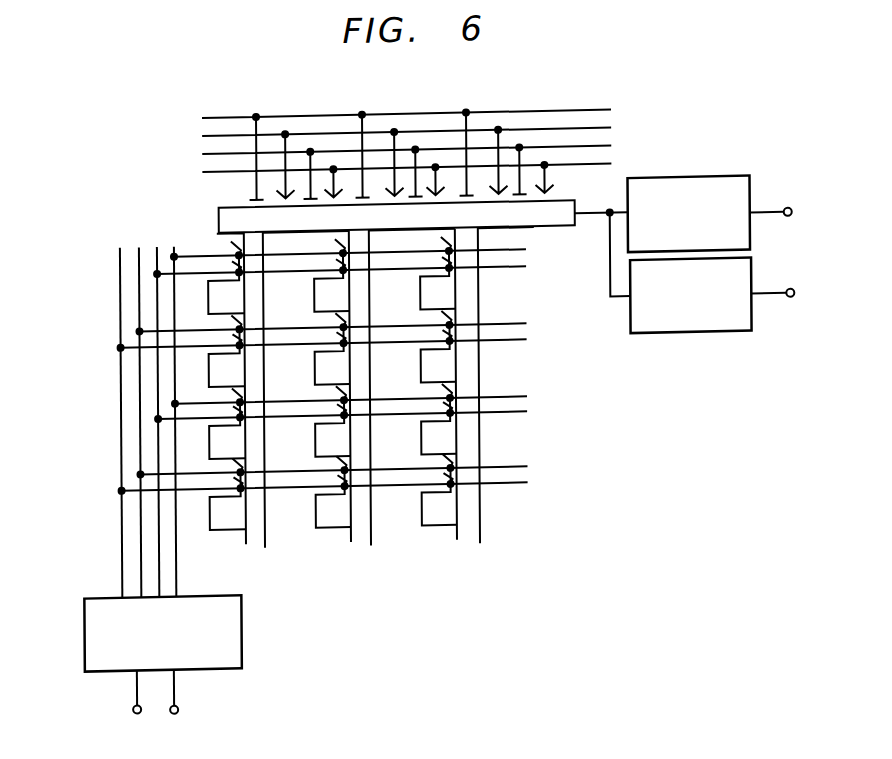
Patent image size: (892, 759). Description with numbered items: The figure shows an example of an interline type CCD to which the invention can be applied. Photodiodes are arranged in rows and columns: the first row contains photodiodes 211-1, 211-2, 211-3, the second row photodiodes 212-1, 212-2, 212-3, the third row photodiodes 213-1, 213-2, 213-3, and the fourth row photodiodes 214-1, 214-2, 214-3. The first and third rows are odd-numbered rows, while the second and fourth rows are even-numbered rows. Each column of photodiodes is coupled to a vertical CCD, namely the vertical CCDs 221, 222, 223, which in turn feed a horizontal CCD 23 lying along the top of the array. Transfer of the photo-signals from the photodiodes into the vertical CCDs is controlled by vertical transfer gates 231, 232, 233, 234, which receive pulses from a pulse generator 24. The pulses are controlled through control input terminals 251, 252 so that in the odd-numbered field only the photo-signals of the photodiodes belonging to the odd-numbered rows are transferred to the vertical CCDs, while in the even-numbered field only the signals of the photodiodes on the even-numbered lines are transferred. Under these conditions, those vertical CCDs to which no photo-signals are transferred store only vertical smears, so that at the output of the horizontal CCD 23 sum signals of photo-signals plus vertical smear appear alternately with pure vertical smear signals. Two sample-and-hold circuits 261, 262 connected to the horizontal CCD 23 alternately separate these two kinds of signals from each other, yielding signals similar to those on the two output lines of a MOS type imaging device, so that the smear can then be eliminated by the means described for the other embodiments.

The photodiode 211-1 is at (209, 289).
The photodiode 211-2 is at (315, 296).
The photodiode 211-3 is at (421, 297).
The photodiode 212-1 is at (212, 363).
The photodiode 212-2 is at (316, 353).
The photodiode 212-3 is at (422, 354).
The photodiode 213-1 is at (213, 434).
The photodiode 213-2 is at (316, 440).
The photodiode 213-3 is at (422, 440).
The photodiode 214-1 is at (210, 516).
The photodiode 214-2 is at (316, 516).
The photodiode 214-3 is at (422, 517).
The vertical CCD 221 is at (262, 548).
The vertical CCD 222 is at (370, 548).
The vertical CCD 223 is at (476, 548).
The horizontal CCD 23 is at (554, 230).
The vertical transfer gate 231 is at (121, 502).
The vertical transfer gate 232 is at (140, 534).
The vertical transfer gate 233 is at (158, 571).
The vertical transfer gate 234 is at (175, 580).
The pulse generator 24 is at (242, 638).
The control input terminal 251 is at (130, 705).
The control input terminal 252 is at (176, 706).
The sample-and-hold circuit 261 is at (679, 184).
The sample-and-hold circuit 262 is at (677, 340).